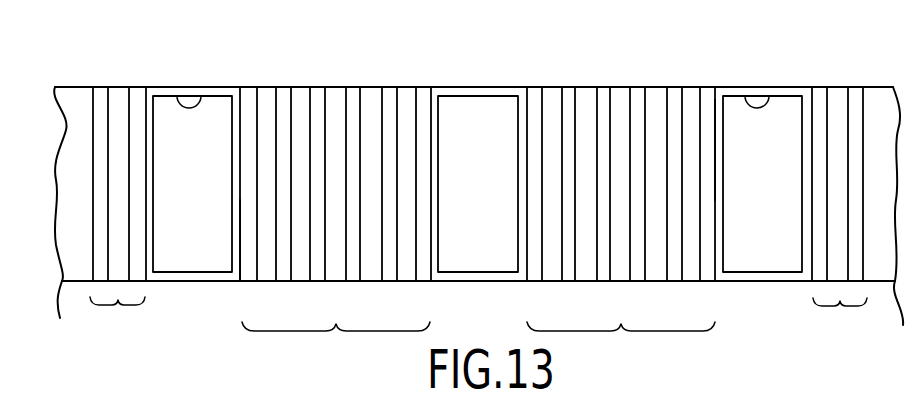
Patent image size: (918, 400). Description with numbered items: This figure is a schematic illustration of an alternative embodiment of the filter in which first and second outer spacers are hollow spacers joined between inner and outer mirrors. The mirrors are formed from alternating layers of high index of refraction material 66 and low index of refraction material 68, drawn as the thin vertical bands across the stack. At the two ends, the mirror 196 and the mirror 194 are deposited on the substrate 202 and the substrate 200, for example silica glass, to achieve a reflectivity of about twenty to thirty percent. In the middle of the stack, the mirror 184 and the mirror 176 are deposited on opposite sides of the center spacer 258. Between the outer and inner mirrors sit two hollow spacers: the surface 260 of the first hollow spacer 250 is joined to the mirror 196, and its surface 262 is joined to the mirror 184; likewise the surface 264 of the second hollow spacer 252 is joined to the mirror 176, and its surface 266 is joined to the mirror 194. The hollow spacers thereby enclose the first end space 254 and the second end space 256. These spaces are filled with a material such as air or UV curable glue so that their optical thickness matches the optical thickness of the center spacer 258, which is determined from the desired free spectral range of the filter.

The high index of refraction material 66 is at (100, 88).
The low index of refraction material 68 is at (118, 88).
The mirror 176 is at (621, 346).
The mirror 184 is at (336, 346).
The mirror 194 is at (840, 321).
The mirror 196 is at (117, 322).
The substrate 200 is at (897, 224).
The substrate 202 is at (55, 222).
The first hollow spacer 250 is at (198, 96).
The second hollow spacer 252 is at (765, 96).
The first end space 254 is at (212, 203).
The second end space 256 is at (782, 203).
The center spacer 258 is at (498, 203).
The surface 260 is at (148, 158).
The surface 262 is at (236, 257).
The surface 264 is at (718, 160).
The surface 266 is at (808, 260).